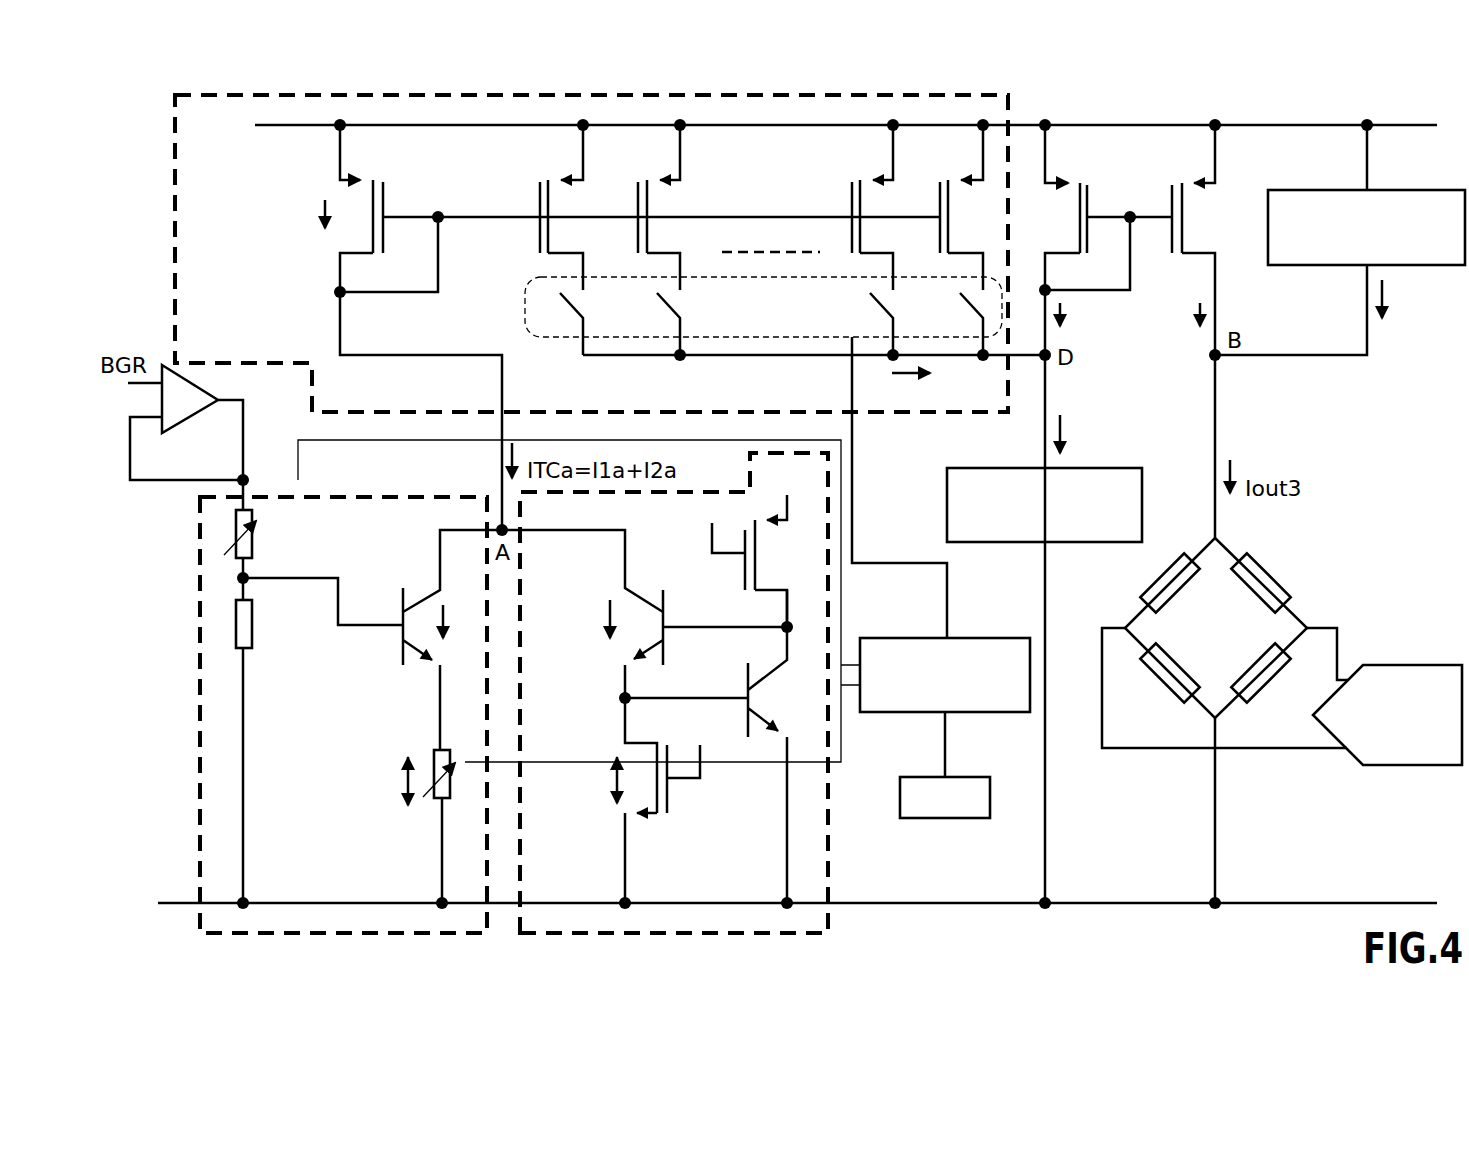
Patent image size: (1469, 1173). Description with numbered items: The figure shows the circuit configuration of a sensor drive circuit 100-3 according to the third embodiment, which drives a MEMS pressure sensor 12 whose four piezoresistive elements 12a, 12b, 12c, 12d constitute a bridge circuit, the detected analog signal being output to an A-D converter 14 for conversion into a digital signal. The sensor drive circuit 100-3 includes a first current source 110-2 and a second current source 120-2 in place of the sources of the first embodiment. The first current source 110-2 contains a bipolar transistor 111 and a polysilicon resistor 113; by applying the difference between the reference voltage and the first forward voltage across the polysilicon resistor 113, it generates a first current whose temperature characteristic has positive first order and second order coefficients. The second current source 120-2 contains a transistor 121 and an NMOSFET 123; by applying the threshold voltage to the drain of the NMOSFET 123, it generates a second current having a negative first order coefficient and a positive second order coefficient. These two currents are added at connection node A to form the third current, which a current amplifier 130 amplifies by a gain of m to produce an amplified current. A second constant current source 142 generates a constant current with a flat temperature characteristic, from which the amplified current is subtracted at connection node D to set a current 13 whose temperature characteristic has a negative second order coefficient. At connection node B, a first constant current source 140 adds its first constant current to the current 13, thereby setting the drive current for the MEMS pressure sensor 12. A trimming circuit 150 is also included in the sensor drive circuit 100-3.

The sensor drive circuit 100-3 is at (1467, 101).
The current amplifier 130 is at (170, 190).
The first current source 110-2 is at (410, 935).
The second current source 120-2 is at (745, 935).
The first bipolar transistor 111 is at (386, 662).
The polysilicon resistor 113 is at (406, 852).
The second bipolar transistor 121 is at (740, 680).
The NMOSFET 123 is at (640, 838).
The output current 13 is at (1130, 318).
The first constant current source 140 is at (1450, 190).
The second constant current source 142 is at (1142, 470).
The trimming circuit 150 is at (1012, 637).
The MEMS pressure sensor 12 is at (1340, 596).
The piezoresistive element 12a is at (1160, 572).
The piezoresistive element 12b is at (1268, 578).
The piezoresistive element 12c is at (1258, 697).
The piezoresistive element 12d is at (1162, 683).
The A-D converter 14 is at (1415, 663).